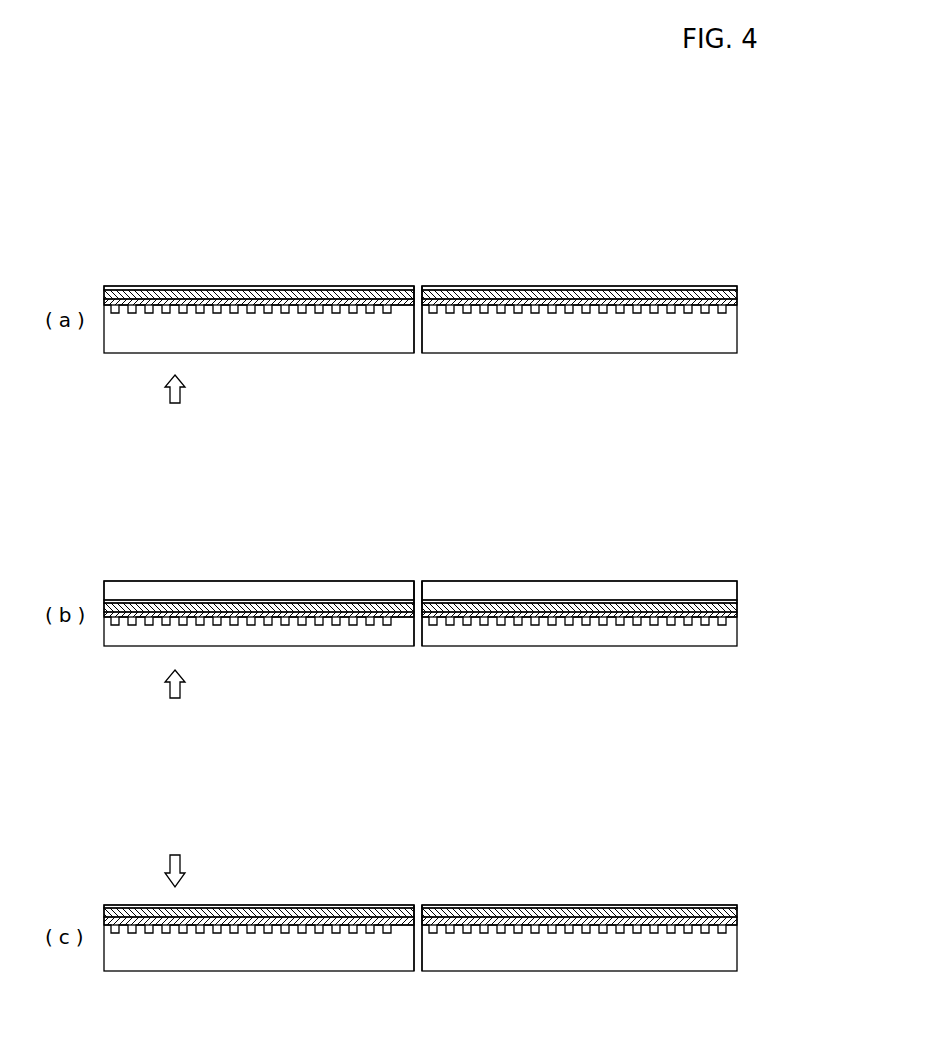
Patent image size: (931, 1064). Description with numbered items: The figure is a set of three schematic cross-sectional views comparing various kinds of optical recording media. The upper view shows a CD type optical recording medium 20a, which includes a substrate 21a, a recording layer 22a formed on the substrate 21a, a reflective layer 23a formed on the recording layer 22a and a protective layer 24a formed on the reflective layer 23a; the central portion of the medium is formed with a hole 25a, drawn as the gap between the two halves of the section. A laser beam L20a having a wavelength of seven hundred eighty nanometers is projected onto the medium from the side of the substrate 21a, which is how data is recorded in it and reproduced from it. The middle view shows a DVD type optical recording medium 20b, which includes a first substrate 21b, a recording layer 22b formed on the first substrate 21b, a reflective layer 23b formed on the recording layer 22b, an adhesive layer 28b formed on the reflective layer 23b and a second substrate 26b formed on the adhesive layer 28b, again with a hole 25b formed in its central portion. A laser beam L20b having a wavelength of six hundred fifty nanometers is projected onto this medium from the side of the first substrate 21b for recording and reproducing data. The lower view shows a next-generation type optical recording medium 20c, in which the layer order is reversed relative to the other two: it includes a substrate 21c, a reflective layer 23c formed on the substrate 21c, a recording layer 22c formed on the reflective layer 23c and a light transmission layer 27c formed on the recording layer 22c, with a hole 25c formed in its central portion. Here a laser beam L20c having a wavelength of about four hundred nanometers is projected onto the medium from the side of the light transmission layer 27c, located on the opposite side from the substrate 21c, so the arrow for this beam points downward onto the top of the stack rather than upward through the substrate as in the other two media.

The CD type optical recording medium 20a is at (666, 222).
The substrate 21a is at (727, 333).
The recording layer 22a is at (737, 304).
The reflective layer 23a is at (737, 296).
The protective layer 24a is at (737, 287).
The hole 25a is at (424, 274).
The laser beam L20a is at (187, 406).
The DVD type optical recording medium 20b is at (666, 517).
The first substrate 21b is at (730, 637).
The recording layer 22b is at (737, 615).
The reflective layer 23b is at (737, 608).
The second substrate 26b is at (732, 593).
The adhesive layer 28b is at (737, 601).
The hole 25b is at (424, 569).
The laser beam L20b is at (187, 701).
The next-generation type optical recording medium 20c is at (666, 839).
The substrate 21c is at (730, 950).
The recording layer 22c is at (738, 912).
The reflective layer 23c is at (738, 920).
The light transmission layer 27c is at (738, 906).
The hole 25c is at (424, 891).
The laser beam L20c is at (187, 851).